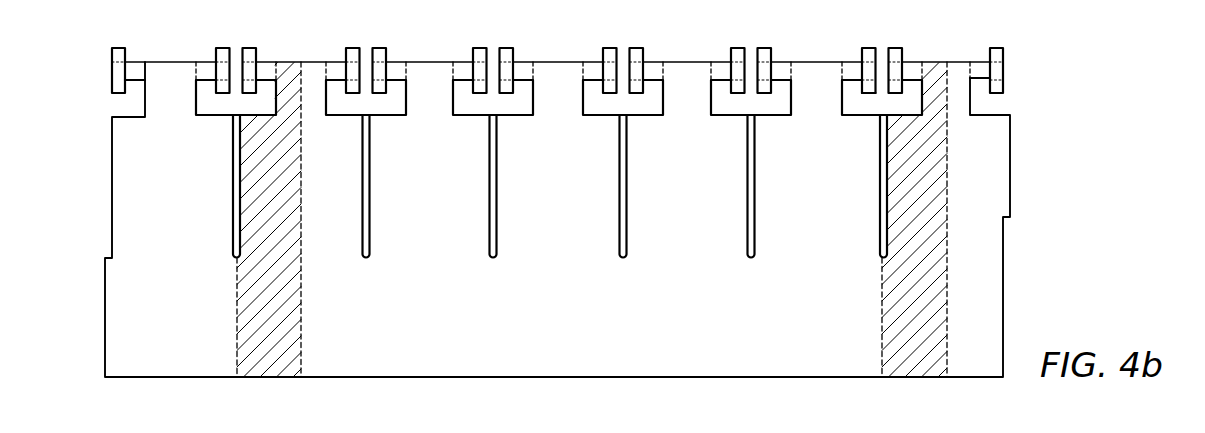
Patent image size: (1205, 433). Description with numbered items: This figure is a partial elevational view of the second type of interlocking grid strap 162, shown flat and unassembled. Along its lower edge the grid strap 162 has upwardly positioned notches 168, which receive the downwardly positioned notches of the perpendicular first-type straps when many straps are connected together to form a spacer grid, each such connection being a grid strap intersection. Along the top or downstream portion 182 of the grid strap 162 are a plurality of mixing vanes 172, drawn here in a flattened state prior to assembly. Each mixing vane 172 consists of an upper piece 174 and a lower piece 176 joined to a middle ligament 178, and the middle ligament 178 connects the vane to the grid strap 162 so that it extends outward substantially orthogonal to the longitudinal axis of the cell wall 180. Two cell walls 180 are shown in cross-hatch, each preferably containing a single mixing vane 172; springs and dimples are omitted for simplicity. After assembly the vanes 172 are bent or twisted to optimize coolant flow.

The grid strap 162 is at (1012, 259).
The upwardly positioned notches 168 is at (753, 258).
The mixing vanes 172 is at (208, 52).
The upper piece 174 is at (862, 55).
The lower piece 176 is at (866, 95).
The middle ligament 178 is at (845, 68).
The cell wall 180 is at (255, 358).
The downstream portion 182 is at (958, 78).